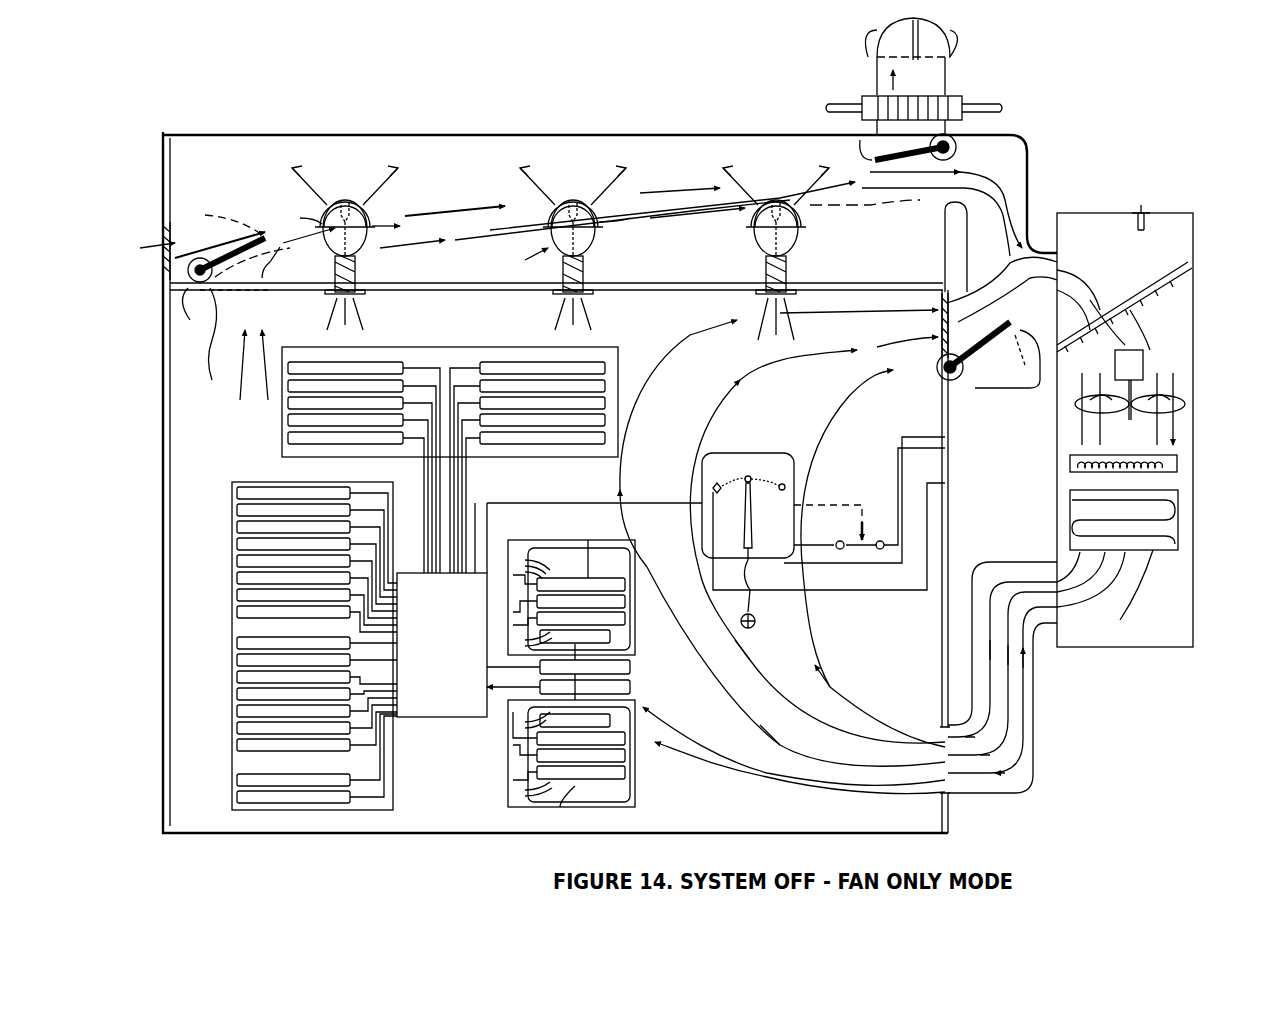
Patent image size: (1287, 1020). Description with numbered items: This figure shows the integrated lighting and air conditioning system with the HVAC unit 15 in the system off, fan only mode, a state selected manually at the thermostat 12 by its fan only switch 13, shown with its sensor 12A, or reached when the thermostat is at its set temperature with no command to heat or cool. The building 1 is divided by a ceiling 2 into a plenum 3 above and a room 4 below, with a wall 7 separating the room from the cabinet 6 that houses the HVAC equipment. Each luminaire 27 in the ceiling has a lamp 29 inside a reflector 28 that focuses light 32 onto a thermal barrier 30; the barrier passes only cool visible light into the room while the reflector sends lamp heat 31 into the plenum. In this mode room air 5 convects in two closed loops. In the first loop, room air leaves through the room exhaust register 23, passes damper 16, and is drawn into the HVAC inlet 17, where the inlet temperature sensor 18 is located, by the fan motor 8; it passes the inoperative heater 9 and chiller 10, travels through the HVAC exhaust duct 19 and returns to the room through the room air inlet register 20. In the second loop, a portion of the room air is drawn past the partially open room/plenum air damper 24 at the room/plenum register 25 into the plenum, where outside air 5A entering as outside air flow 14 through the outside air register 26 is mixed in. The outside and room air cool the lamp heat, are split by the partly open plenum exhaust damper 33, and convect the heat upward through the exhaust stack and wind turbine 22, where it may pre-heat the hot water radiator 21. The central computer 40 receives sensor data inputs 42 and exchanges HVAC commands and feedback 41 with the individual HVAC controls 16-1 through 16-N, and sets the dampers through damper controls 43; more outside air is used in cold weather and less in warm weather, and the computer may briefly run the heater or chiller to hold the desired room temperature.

The building 1 is at (482, 128).
The ceiling 2 is at (372, 290).
The plenum 3 is at (462, 253).
The room 4 is at (700, 399).
The room air 5 is at (827, 678).
The outside air 5A is at (448, 212).
The air handling unit cabinet 6 is at (1176, 177).
The wall 7 is at (942, 250).
The fan motor 8 is at (1192, 395).
The heater 9 is at (1178, 465).
The chiller 10 is at (1180, 510).
The thermostat 12 is at (702, 472).
The temperature sensor 12A is at (757, 621).
The fan only switch 13 is at (864, 500).
The outside air flow 14 is at (190, 278).
The HVAC unit 15 is at (1086, 195).
The damper 16 is at (942, 378).
The HVAC unit 1 controls 16-1 is at (571, 583).
The HVAC unit N controls 16-N is at (520, 810).
The HVAC inlet 17 is at (1112, 252).
The HVAC inlet temperature sensor 18 is at (1145, 228).
The HVAC exhaust duct 19 is at (1160, 626).
The HVAC room air inlet register 20 is at (940, 738).
The hot water radiator 21 is at (950, 96).
The plenum exhaust stack and turbine 22 is at (876, 40).
The room exhaust register 23 is at (912, 315).
The room/plenum air damper 24 is at (193, 313).
The room/plenum register 25 is at (229, 344).
The outside air register 26 is at (165, 240).
The luminaire 27 is at (523, 260).
The reflector 28 is at (625, 218).
The lamp 29 is at (304, 212).
The thermal barrier 30 is at (357, 268).
The lamp heat 31 is at (560, 208).
The light 32 is at (560, 323).
The plenum exhaust damper 33 is at (956, 150).
The central computer 40 is at (425, 728).
The HVAC commands and feedback 41 is at (637, 680).
The sensor data input 42 is at (275, 478).
The damper controls 43 is at (485, 457).